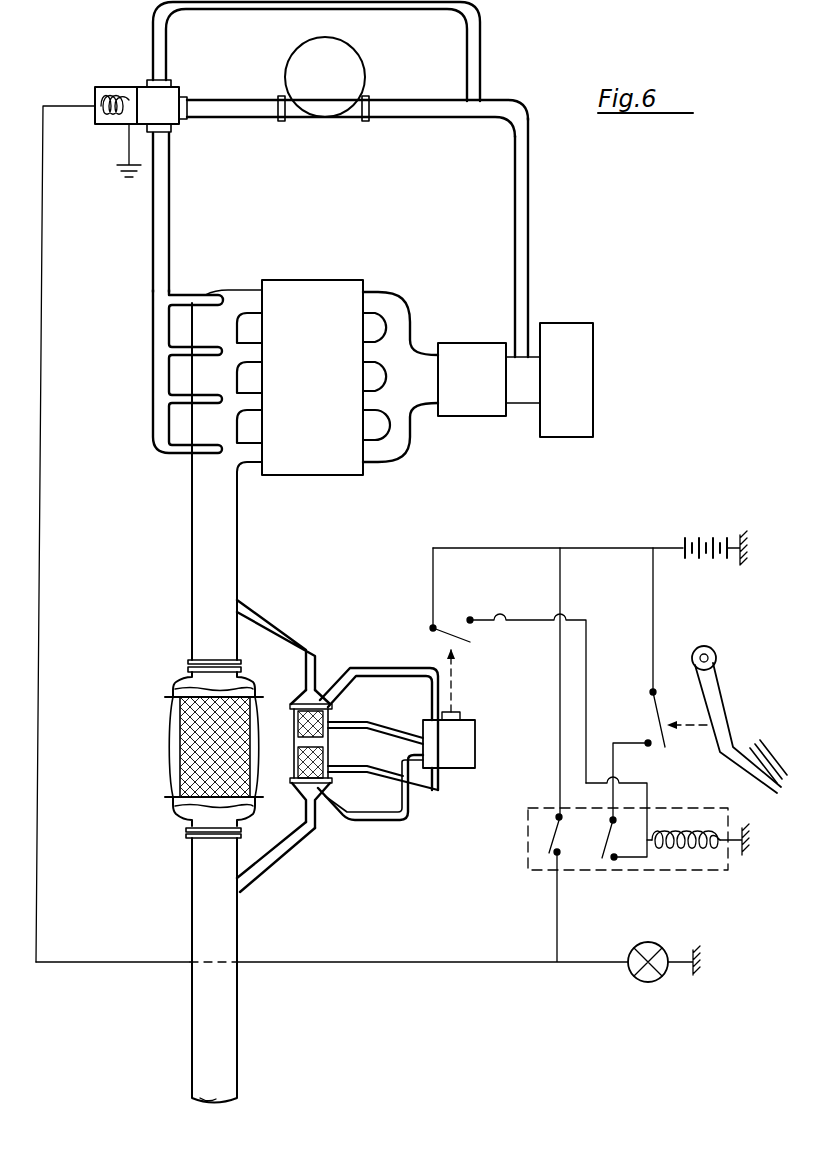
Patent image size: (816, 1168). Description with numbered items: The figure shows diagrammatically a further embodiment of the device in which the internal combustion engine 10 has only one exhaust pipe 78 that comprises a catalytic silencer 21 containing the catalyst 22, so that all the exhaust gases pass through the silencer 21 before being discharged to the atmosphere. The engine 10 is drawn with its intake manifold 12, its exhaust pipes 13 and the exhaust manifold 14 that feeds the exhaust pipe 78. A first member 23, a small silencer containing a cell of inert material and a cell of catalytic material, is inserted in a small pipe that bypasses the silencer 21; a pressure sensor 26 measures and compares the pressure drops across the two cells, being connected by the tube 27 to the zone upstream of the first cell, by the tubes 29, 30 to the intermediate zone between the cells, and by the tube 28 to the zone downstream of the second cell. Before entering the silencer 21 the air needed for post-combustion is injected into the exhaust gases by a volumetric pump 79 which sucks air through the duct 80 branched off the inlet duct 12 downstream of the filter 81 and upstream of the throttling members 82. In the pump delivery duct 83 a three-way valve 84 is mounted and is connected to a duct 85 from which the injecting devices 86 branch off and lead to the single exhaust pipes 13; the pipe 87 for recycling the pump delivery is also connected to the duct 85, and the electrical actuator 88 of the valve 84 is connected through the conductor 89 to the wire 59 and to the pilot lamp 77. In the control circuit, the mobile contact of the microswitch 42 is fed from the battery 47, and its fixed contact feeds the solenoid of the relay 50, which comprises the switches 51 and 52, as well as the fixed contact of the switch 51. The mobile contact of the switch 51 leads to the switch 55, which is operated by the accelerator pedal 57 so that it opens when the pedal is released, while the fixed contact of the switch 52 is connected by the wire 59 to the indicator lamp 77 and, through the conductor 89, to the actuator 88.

The internal combustion engine 10 is at (313, 478).
The intake manifold 12 is at (523, 402).
The exhaust pipes 13 is at (245, 300).
The exhaust manifold 14 is at (192, 519).
The catalytic silencer 21 is at (171, 758).
The catalyst 22 is at (203, 725).
The first member 23 is at (292, 763).
The pressure sensor 26 is at (452, 771).
The tube 27 is at (374, 668).
The tube 28 is at (373, 820).
The tube 29 is at (364, 722).
The tube 30 is at (353, 766).
The microswitch 42 is at (450, 627).
The battery 47 is at (702, 546).
The relay 50 is at (688, 876).
The switch 51 is at (600, 847).
The switch 52 is at (545, 835).
The switch 55 is at (652, 718).
The accelerator pedal 57 is at (713, 700).
The wire 59 is at (557, 921).
The indicator lamp 77 is at (648, 978).
The exhaust pipe 78 is at (222, 1022).
The volumetric pump 79 is at (358, 64).
The duct 80 is at (523, 197).
The filter 81 is at (583, 348).
The throttling members 82 is at (477, 352).
The pump delivery duct 83 is at (238, 110).
The three-way valve 84 is at (174, 98).
The duct 85 is at (157, 232).
The injecting devices 86 is at (187, 300).
The recycle pipe 87 is at (208, 3).
The electrical actuator 88 is at (105, 122).
The conductor 89 is at (44, 430).